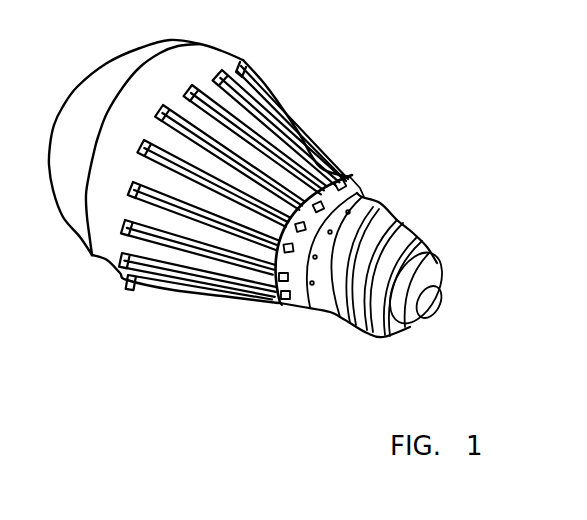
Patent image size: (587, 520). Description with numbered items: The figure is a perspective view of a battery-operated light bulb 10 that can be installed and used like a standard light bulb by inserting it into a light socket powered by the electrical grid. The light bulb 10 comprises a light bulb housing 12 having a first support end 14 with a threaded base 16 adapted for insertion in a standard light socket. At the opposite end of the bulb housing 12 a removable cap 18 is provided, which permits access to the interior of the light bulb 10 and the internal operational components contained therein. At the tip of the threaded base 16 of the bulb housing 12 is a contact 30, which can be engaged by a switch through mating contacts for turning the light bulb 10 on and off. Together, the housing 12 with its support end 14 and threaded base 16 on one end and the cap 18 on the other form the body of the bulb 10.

The battery-operated light bulb 10 is at (348, 55).
The light bulb housing 12 is at (114, 259).
The first support end 14 is at (301, 340).
The threaded base 16 is at (444, 237).
The removable cap 18 is at (80, 93).
The contact 30 is at (436, 305).